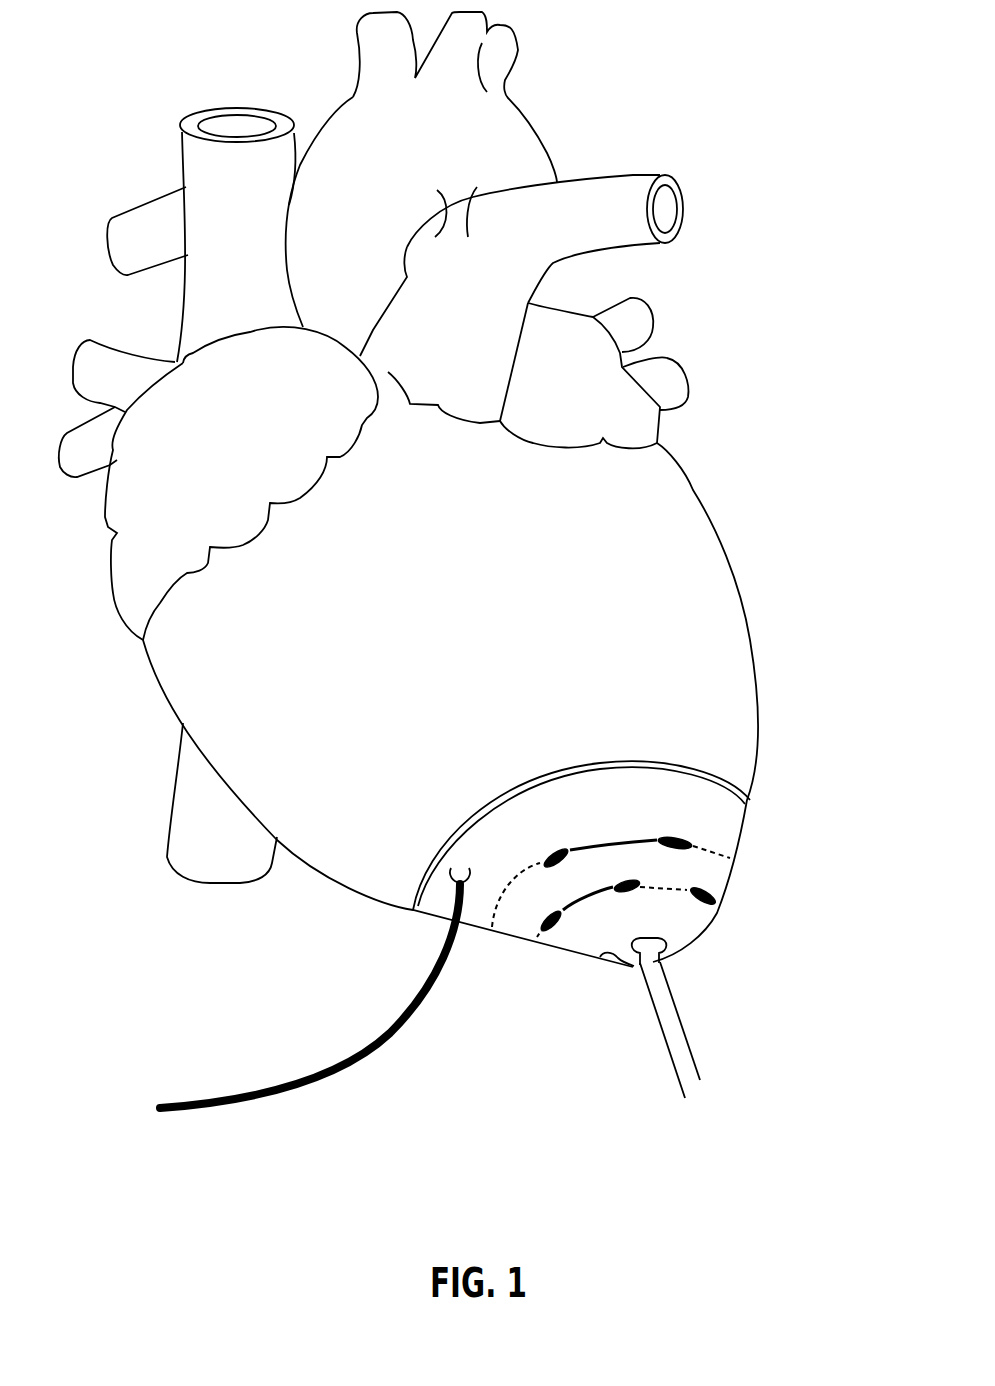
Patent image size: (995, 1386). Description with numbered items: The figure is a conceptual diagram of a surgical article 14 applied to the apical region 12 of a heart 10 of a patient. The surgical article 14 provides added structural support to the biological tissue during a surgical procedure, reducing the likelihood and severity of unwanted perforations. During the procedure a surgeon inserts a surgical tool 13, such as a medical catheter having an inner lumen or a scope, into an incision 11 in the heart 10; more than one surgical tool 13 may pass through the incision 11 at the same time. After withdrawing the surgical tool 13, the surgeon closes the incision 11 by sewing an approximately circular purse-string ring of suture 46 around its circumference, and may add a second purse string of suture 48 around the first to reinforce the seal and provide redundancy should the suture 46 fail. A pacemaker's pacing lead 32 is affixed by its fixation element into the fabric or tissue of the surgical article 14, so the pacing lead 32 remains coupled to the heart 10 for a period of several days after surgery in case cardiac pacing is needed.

The heart 10 is at (243, 172).
The incision 11 is at (660, 965).
The apical region 12 is at (612, 965).
The surgical tool 13 is at (668, 1020).
The surgical article 14 is at (712, 828).
The pacing lead 32 is at (423, 983).
The suture 46 is at (667, 888).
The suture 48 is at (735, 865).